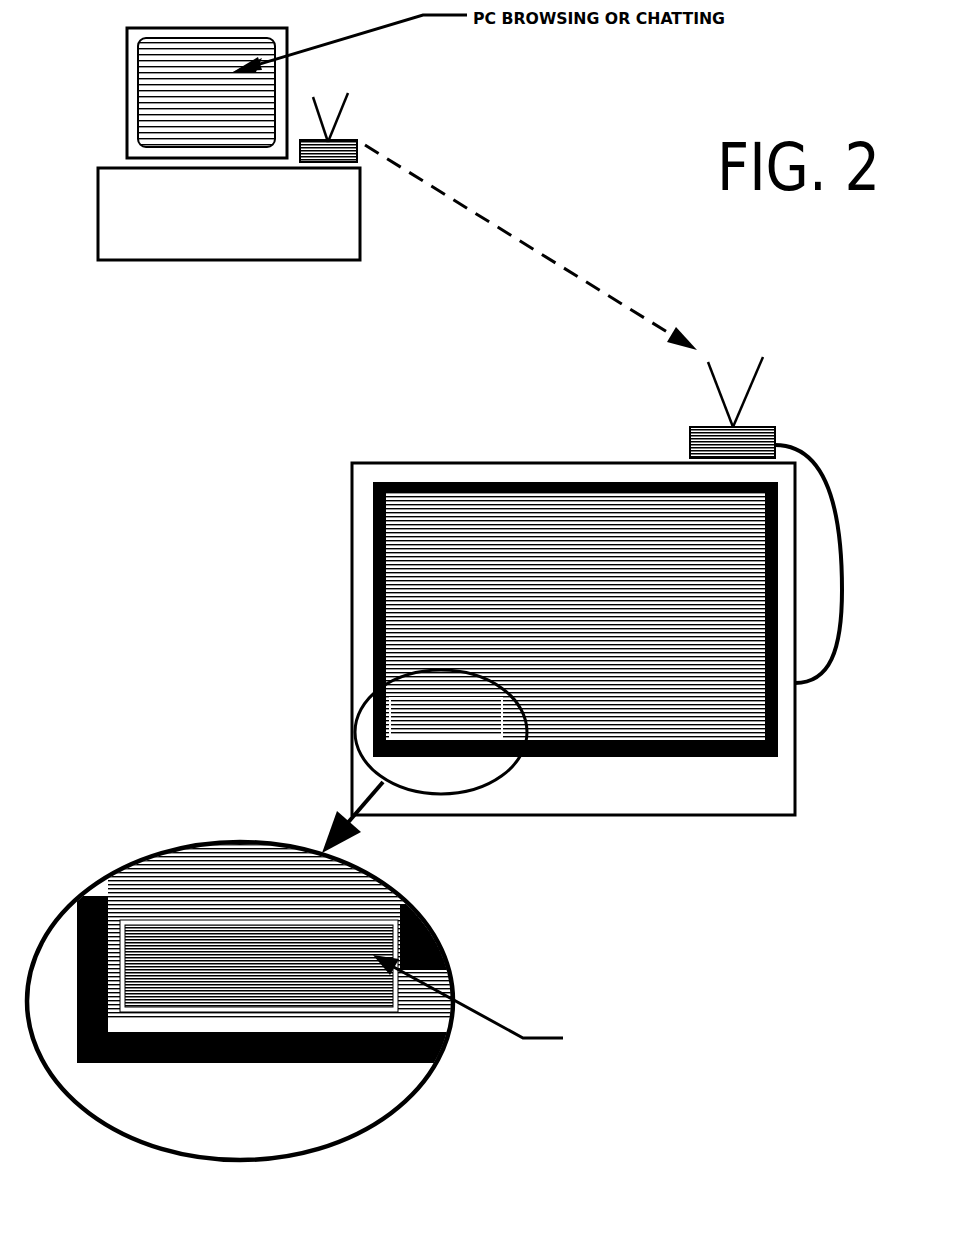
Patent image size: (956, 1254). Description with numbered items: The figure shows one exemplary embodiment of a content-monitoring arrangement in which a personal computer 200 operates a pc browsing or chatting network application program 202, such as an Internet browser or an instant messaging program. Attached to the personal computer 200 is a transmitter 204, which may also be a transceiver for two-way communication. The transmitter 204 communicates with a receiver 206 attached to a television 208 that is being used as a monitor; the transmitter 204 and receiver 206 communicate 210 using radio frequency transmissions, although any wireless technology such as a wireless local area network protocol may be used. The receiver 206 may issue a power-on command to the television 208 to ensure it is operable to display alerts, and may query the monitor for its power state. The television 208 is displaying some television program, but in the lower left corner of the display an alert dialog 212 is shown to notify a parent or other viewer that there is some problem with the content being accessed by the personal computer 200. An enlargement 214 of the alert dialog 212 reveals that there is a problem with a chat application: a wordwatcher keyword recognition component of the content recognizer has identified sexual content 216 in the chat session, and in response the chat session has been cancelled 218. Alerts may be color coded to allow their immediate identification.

The personal computer 200 is at (263, 258).
The pc browsing or chatting network application program 202 is at (190, 107).
The transmitter 204 is at (343, 147).
The receiver 206 is at (757, 437).
The television 208 is at (352, 535).
The communication 210 is at (503, 270).
The alert dialog 212 is at (370, 695).
The enlargement 214 is at (485, 971).
The sexual content 216 is at (330, 987).
The cancelled 218 is at (303, 940).